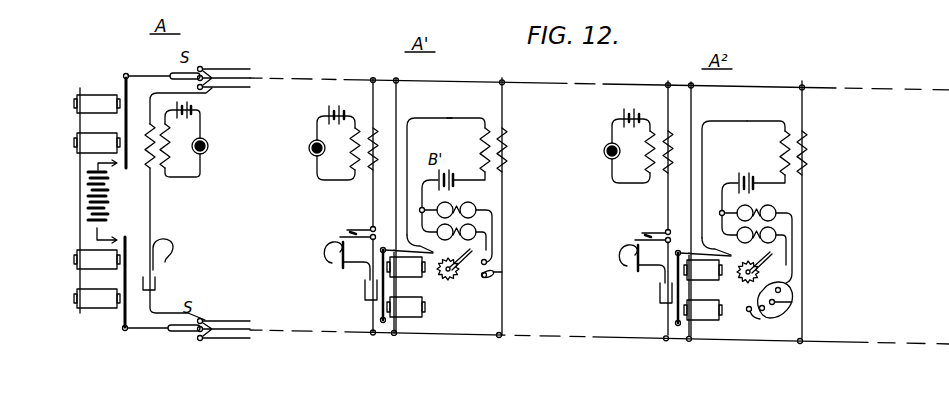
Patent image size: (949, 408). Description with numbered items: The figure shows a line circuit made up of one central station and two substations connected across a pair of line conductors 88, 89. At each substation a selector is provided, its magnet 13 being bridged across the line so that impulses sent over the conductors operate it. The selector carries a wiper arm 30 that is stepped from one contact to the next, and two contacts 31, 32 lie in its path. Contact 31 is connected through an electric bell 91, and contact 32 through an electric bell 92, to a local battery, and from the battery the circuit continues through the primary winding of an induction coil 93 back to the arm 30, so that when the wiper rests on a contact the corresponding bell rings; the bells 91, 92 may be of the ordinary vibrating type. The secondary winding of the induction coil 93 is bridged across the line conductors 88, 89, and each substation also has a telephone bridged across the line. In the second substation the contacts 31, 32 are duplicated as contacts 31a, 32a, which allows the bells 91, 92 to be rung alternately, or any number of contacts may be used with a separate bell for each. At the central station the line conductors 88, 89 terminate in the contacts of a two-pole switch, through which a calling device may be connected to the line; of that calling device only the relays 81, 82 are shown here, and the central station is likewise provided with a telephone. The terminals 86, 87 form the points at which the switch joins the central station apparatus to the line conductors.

The magnet 13 is at (418, 296).
The arm 30 is at (454, 259).
The contact 31 is at (488, 260).
The contact 32 is at (495, 272).
The duplicated contact 31a is at (786, 283).
The duplicated contact 32a is at (748, 313).
The relay 81 is at (81, 138).
The relay 82 is at (92, 296).
The contact bar 86 is at (130, 331).
The contact bar 87 is at (137, 64).
The line conductor 88 is at (838, 89).
The line conductor 89 is at (828, 342).
The electric bell 91 is at (474, 230).
The electric bell 92 is at (473, 207).
The induction coil 93 is at (490, 131).